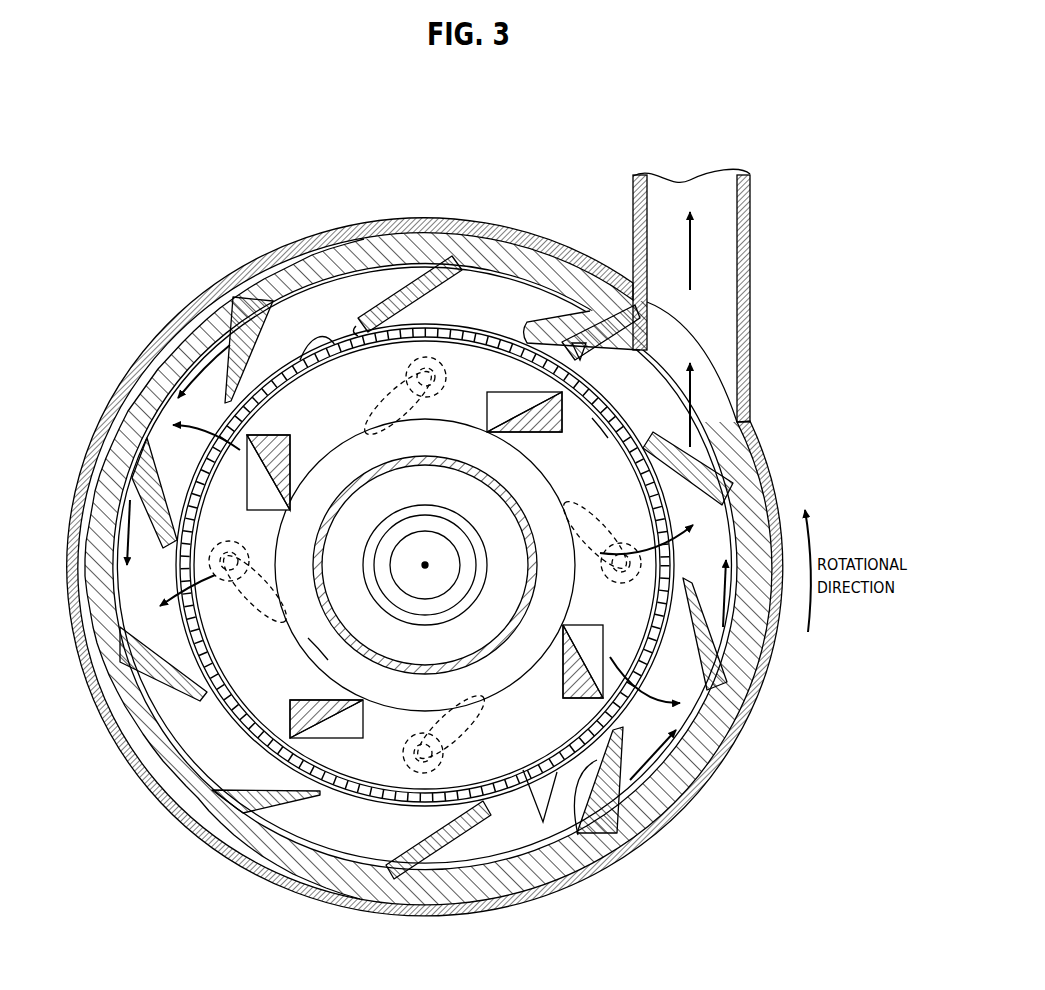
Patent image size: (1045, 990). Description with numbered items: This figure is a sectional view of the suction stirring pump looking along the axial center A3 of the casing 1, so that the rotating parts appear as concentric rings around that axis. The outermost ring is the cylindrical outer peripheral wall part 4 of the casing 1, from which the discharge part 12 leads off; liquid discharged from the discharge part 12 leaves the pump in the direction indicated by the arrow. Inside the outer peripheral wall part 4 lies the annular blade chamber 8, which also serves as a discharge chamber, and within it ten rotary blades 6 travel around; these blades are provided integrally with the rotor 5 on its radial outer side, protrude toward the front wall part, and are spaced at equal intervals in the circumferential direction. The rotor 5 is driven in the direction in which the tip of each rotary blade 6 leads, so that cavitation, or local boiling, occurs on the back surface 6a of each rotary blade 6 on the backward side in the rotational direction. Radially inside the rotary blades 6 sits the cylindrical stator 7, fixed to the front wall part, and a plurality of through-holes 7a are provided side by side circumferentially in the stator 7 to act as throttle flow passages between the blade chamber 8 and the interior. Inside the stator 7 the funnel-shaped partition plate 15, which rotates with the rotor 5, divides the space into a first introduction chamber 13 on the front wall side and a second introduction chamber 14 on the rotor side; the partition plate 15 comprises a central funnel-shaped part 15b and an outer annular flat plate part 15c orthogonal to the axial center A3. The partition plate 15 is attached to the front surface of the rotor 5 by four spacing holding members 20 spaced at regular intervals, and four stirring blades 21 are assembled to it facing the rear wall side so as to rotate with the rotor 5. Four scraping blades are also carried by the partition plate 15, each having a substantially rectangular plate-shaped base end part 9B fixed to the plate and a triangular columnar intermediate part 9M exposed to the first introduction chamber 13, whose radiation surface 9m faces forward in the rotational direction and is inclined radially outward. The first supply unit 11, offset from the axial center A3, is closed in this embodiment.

The casing 1 is at (186, 302).
The outer peripheral wall part 4 is at (160, 782).
The rotor 5 is at (512, 576).
The rotary blade 6 is at (430, 287).
The back surface of rotary blade 6a is at (394, 320).
The stator 7 is at (680, 570).
The through-hole 7a is at (327, 343).
The blade chamber 8 is at (504, 848).
The base end part 9B is at (518, 393).
The intermediate part 9M is at (538, 435).
The side surface (radiation surface) 9m is at (505, 418).
The first supply unit 11 is at (402, 524).
The discharge part 12 is at (724, 266).
The first introduction chamber 13 is at (551, 743).
The second introduction chamber 14 is at (437, 657).
The partition plate 15 is at (258, 722).
The funnel-shaped part 15b is at (330, 636).
The annular flat plate part 15c is at (585, 430).
The spacing holding member 20 is at (198, 476).
The stirring blade 21 is at (624, 528).
The axial center A3 is at (425, 562).